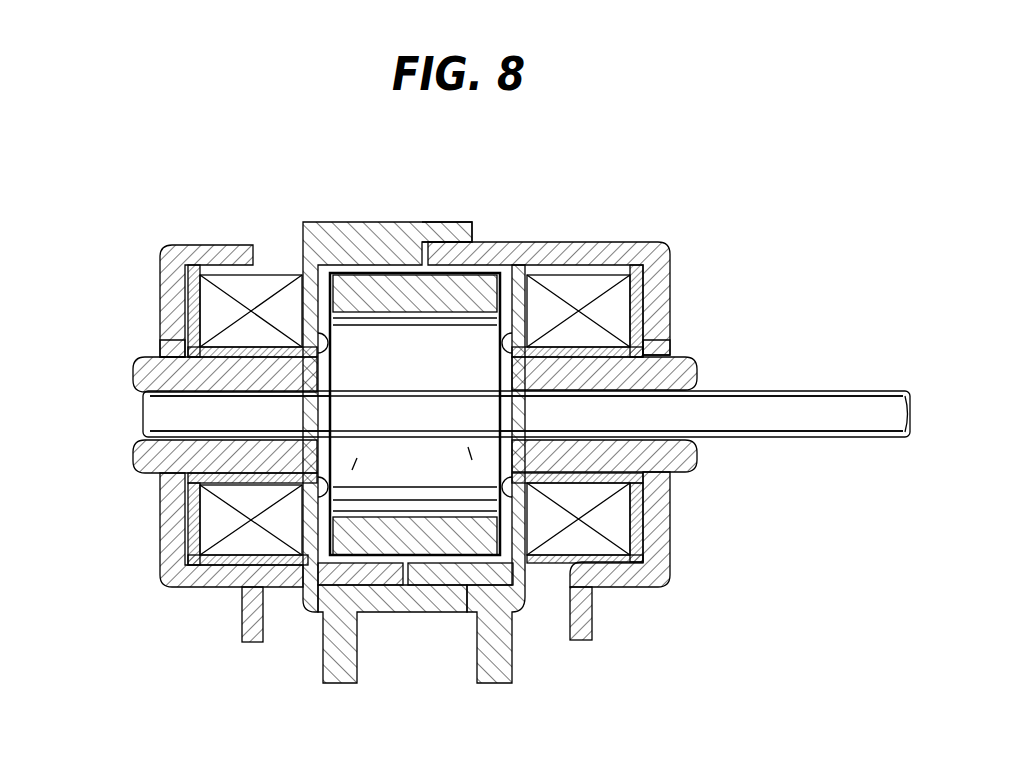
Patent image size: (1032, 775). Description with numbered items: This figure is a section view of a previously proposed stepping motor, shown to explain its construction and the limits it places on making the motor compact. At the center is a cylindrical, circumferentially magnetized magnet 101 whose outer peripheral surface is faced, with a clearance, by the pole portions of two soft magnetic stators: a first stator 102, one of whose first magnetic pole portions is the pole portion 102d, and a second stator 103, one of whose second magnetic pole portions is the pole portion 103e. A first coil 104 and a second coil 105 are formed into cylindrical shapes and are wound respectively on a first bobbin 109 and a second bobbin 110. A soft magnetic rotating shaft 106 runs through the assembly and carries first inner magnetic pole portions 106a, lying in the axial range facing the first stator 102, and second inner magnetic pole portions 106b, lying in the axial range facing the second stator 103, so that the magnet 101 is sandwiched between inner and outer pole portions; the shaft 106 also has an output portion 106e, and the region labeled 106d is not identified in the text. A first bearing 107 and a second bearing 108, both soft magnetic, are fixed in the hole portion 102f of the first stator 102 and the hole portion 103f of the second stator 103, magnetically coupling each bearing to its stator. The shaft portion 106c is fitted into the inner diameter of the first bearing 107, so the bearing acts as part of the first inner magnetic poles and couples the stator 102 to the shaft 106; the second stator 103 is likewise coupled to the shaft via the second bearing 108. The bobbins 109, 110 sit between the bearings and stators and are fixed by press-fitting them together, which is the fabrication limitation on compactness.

The magnet 101 is at (383, 292).
The first stator 102 is at (148, 583).
The first magnetic pole portion 102d is at (208, 575).
The hole portion 102f is at (167, 365).
The second stator 103 is at (662, 600).
The second magnetic pole portion 103e is at (447, 253).
The hole portion 103f is at (653, 363).
The first coil 104 is at (263, 285).
The second coil 105 is at (578, 287).
The rotating shaft 106 is at (874, 380).
The first inner magnetic pole portions 106a is at (357, 458).
The second inner magnetic pole portions 106b is at (468, 447).
The shaft portion 106c is at (188, 410).
The right shaft portion 106d is at (663, 415).
The output portion 106e is at (873, 418).
The first bearing 107 is at (170, 377).
The second bearing 108 is at (657, 375).
The first bobbin 109 is at (402, 600).
The second bobbin 110 is at (442, 570).